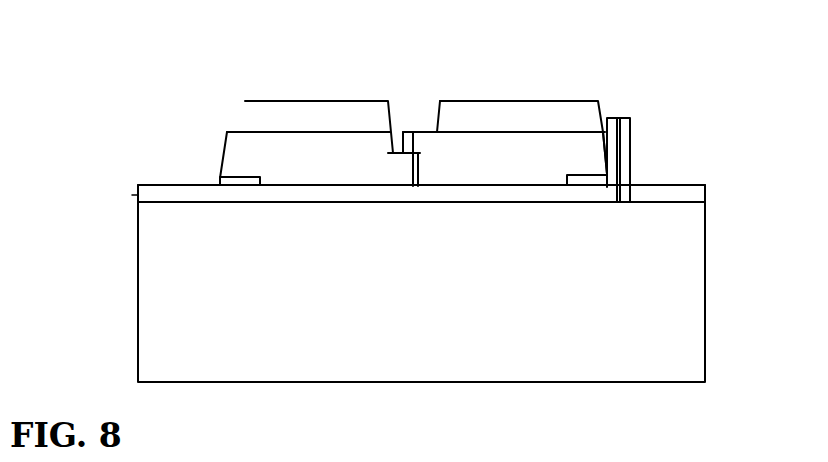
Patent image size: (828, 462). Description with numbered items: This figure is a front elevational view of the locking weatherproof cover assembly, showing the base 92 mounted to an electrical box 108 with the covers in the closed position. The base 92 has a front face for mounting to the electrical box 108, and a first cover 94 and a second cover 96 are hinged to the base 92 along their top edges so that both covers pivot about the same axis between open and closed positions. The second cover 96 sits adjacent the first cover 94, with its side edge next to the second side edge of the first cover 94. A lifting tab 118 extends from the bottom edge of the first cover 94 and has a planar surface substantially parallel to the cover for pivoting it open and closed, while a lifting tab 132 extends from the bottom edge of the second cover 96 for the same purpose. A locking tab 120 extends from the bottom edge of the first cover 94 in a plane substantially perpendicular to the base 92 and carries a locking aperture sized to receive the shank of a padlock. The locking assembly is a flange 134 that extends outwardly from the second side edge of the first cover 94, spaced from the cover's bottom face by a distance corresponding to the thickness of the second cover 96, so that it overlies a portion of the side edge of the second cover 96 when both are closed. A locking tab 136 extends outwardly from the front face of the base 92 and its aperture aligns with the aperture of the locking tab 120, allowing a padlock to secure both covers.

The base 92 is at (708, 184).
The first cover 94 is at (602, 98).
The second cover 96 is at (255, 96).
The electrical box 108 is at (135, 292).
The lifting tab 118 is at (578, 186).
The locking tab 120 is at (603, 157).
The lifting tab 132 is at (260, 177).
The flange 134 is at (403, 132).
The locking tab 136 is at (628, 167).